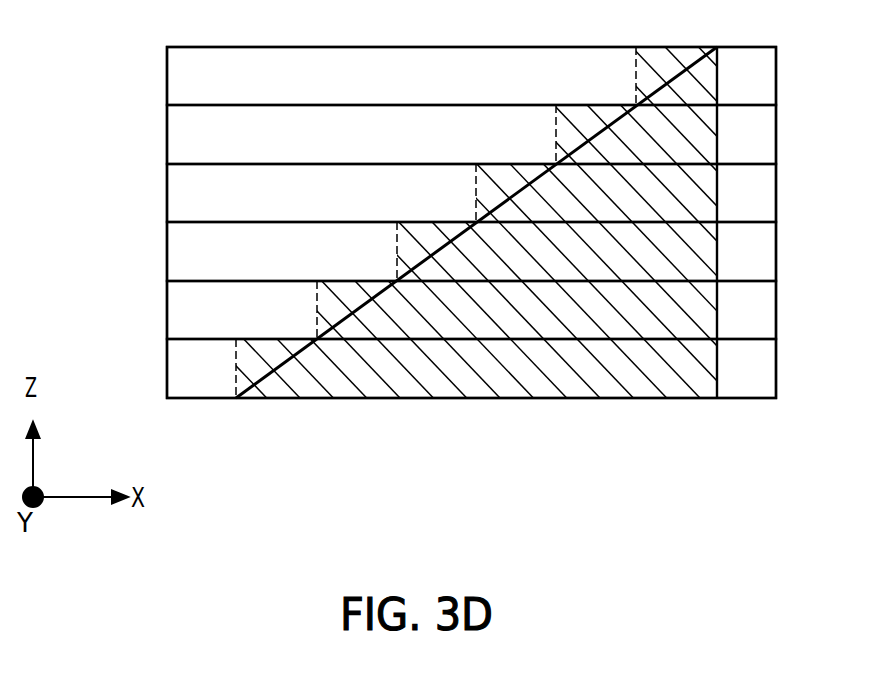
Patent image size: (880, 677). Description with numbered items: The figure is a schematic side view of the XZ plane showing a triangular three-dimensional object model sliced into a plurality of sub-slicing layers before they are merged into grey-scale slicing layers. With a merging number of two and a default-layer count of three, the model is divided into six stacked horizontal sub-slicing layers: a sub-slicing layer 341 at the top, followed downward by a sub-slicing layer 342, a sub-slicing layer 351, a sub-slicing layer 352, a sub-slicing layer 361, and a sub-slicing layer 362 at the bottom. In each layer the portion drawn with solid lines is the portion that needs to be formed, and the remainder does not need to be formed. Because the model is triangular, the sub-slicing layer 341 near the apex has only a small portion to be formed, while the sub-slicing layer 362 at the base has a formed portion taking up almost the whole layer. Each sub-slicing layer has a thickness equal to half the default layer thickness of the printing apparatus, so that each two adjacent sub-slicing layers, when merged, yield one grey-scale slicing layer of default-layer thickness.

The sub-slicing layer 341 is at (167, 77).
The sub-slicing layer 342 is at (167, 136).
The sub-slicing layer 351 is at (167, 194).
The sub-slicing layer 352 is at (167, 253).
The sub-slicing layer 361 is at (167, 312).
The sub-slicing layer 362 is at (167, 379).